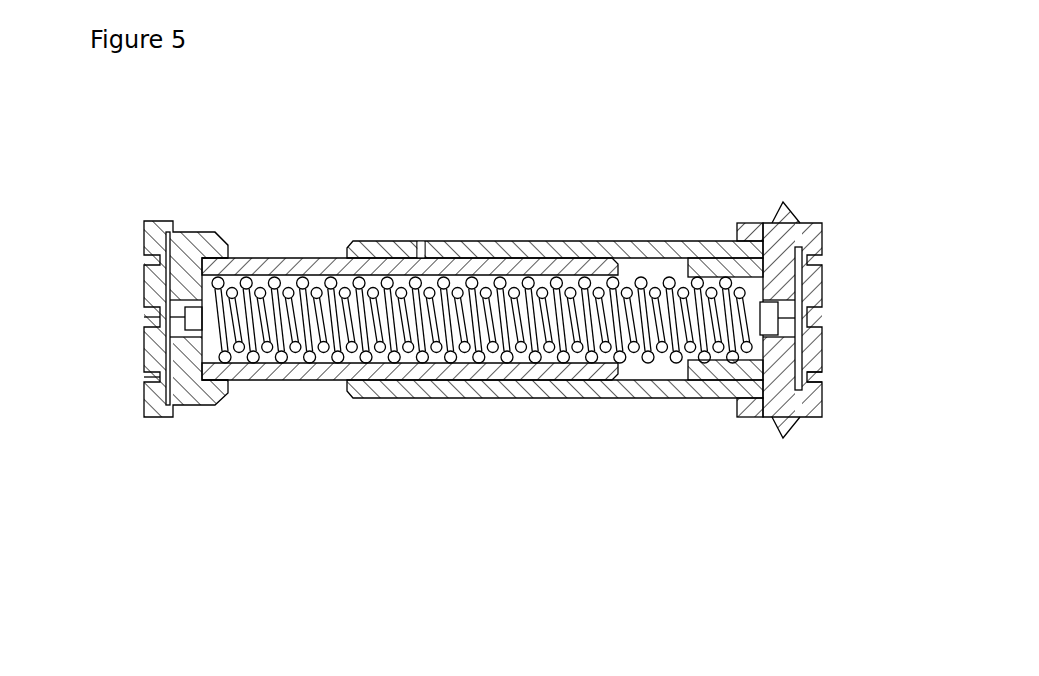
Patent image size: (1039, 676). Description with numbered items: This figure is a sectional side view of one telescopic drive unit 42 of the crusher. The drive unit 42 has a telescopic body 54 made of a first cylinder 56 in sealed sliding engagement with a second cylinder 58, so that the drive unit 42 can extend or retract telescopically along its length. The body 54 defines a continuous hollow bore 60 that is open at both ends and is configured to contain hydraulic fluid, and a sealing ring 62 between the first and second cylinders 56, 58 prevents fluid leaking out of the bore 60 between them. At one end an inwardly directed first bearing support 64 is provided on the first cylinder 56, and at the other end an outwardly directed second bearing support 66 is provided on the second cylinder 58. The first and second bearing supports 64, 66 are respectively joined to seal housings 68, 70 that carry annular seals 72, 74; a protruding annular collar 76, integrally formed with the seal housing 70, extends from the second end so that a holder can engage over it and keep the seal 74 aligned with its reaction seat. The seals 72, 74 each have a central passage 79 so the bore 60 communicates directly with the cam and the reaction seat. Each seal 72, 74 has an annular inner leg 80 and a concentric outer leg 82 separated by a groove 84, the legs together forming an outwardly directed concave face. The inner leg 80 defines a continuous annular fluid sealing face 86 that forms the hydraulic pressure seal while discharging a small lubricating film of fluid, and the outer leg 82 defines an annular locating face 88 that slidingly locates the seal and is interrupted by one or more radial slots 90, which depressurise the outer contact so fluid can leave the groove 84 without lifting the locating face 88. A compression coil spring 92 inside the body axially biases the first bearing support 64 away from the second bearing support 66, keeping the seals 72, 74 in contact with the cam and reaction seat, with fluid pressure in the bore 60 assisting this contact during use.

The drive unit 42 is at (118, 149).
The telescopic body 54 is at (412, 222).
The first cylinder 56 is at (310, 262).
The second cylinder 58 is at (520, 252).
The bore 60 is at (655, 256).
The sealing ring 62 is at (567, 378).
The first bearing support 64 is at (215, 373).
The second bearing support 66 is at (748, 393).
The seal housing 68 is at (193, 393).
The seal housing 70 is at (752, 412).
The annular seal 72 is at (163, 408).
The annular seal 74 is at (798, 410).
The annular collar 76 is at (780, 228).
The central passage 79 is at (192, 317).
The inner leg 80 is at (828, 297).
The outer leg 82 is at (807, 232).
The groove 84 is at (815, 250).
The fluid sealing face 86 is at (808, 357).
The locating face 88 is at (812, 392).
The slots 90 is at (138, 317).
The spring 92 is at (380, 325).